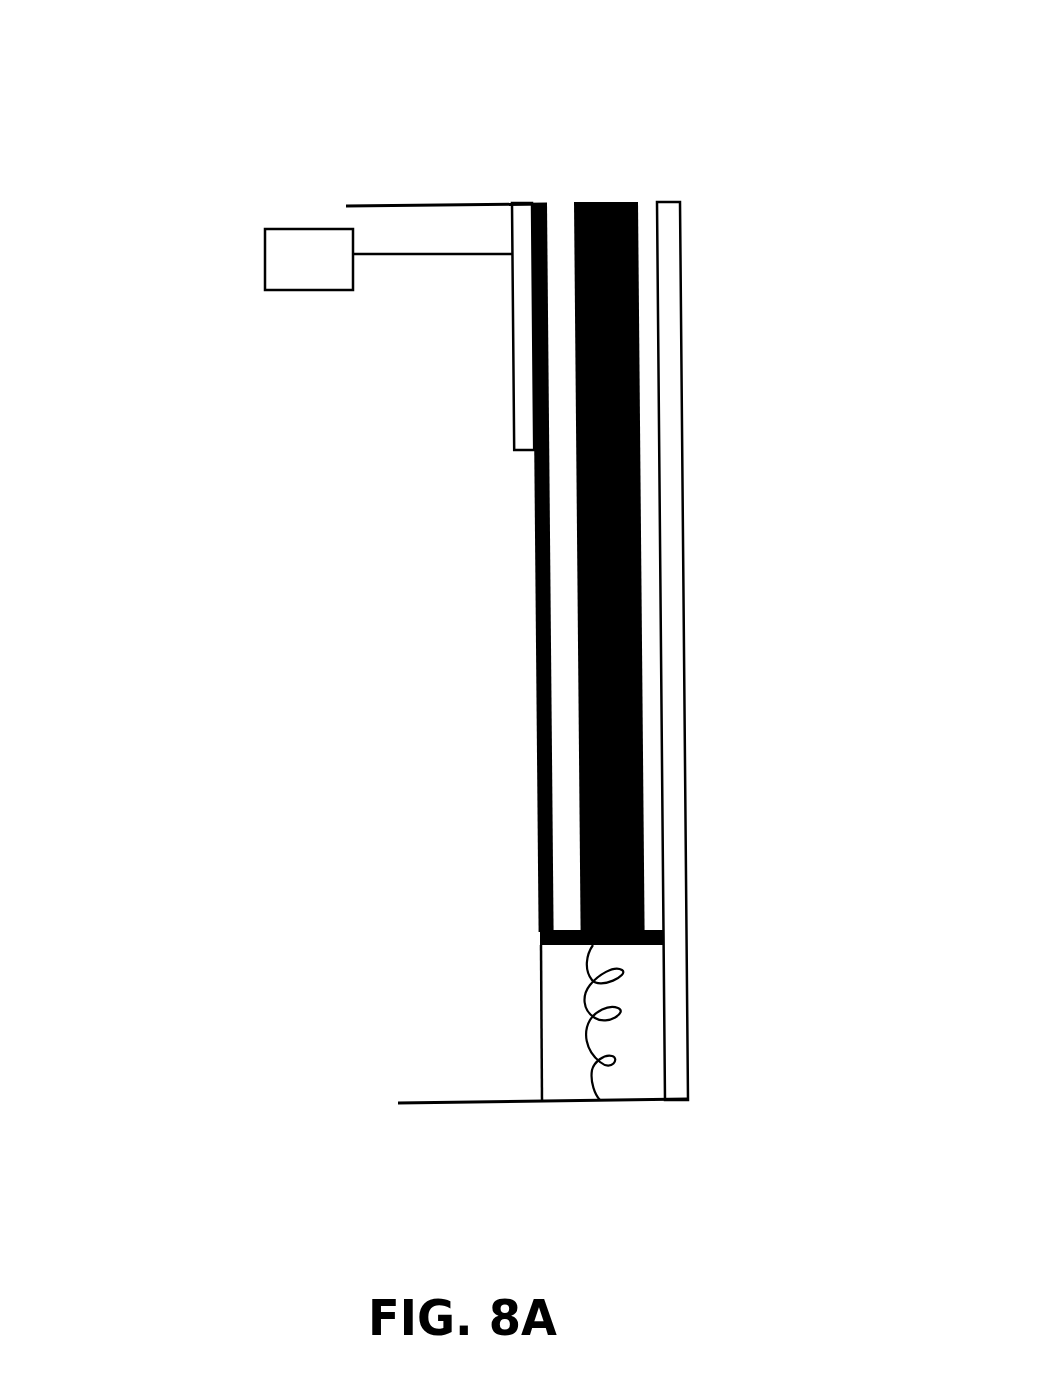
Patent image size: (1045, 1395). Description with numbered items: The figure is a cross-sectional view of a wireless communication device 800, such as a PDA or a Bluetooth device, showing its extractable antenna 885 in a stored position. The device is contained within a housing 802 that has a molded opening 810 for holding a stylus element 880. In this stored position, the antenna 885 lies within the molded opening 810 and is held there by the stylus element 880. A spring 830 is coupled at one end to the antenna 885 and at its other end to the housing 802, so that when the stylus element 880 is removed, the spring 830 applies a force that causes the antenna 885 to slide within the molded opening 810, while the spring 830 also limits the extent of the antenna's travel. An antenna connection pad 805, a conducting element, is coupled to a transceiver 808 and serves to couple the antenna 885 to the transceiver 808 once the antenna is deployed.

The wireless communication device 800 is at (475, 24).
The housing 802 is at (457, 171).
The antenna connection pad 805 is at (429, 362).
The transceiver 808 is at (262, 262).
The molded opening 810 is at (769, 639).
The spring 830 is at (623, 1012).
The stylus element 880 is at (707, 573).
The antenna 885 is at (426, 567).